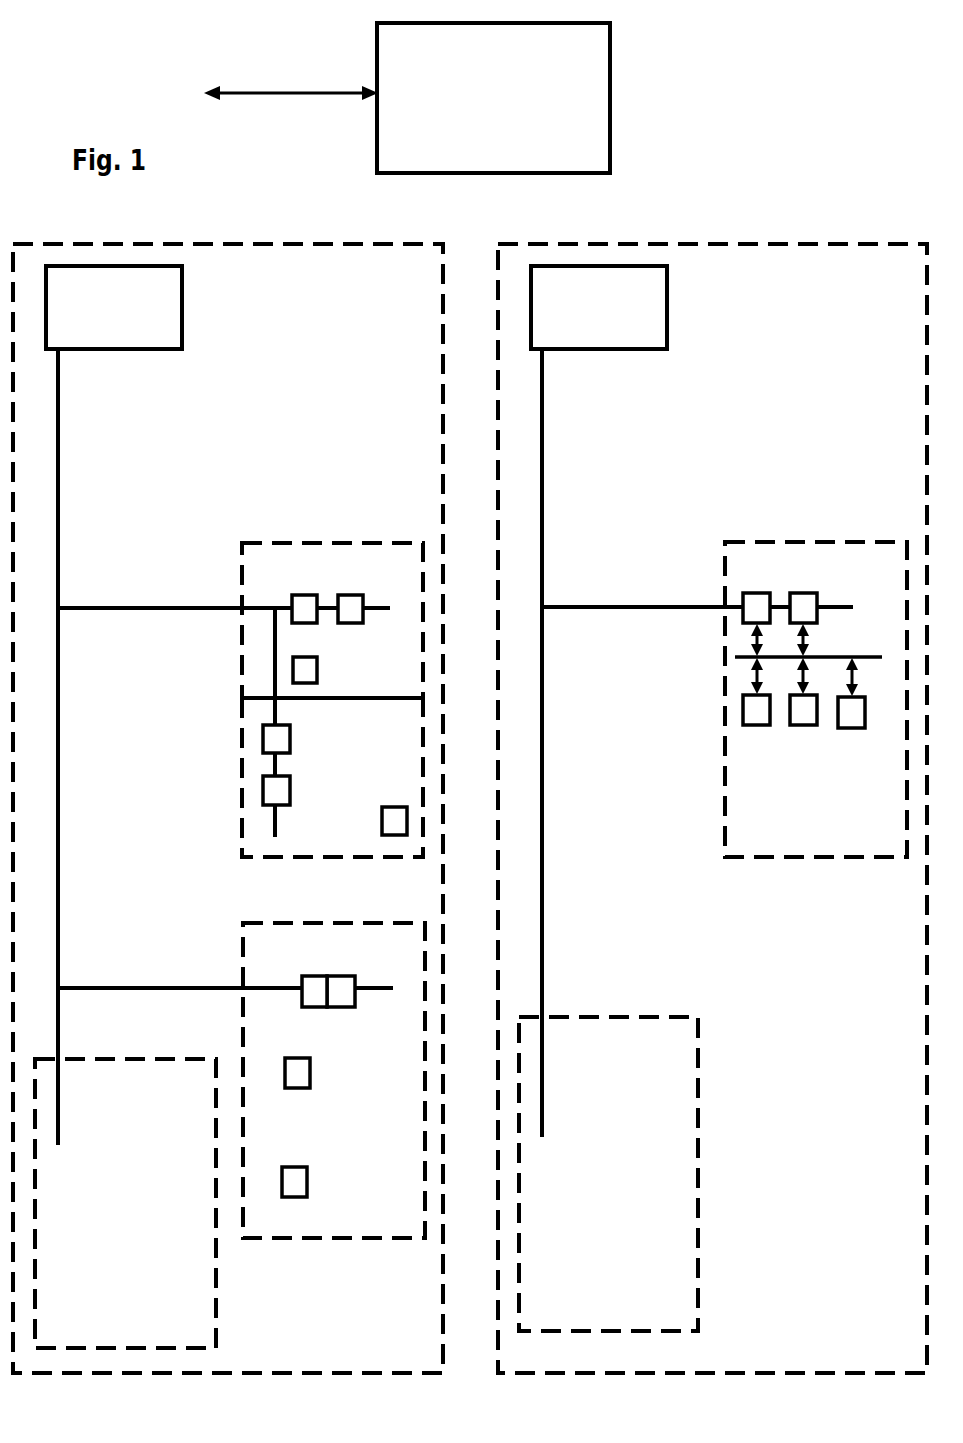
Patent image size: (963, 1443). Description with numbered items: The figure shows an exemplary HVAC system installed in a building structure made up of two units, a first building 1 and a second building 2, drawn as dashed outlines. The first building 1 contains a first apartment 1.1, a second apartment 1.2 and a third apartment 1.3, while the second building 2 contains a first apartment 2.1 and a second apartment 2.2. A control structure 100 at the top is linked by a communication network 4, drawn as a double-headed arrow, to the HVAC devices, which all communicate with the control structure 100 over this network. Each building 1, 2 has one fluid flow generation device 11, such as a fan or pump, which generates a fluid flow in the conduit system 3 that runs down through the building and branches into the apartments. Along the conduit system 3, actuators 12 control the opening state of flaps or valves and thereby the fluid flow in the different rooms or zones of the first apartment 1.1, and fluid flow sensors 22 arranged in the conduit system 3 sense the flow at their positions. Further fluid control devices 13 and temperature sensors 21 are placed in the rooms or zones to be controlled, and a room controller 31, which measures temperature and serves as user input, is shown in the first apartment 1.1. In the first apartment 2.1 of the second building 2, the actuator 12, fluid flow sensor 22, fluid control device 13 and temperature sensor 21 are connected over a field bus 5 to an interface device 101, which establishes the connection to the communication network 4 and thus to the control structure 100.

The first building 1 is at (247, 243).
The second building 2 is at (765, 243).
The conduit system 3 is at (60, 455).
The communication network 4 is at (272, 88).
The field bus 5 is at (854, 657).
The fluid flow generation device 11 is at (99, 310).
The actuator 12 is at (305, 595).
The fluid control device 13 is at (311, 1068).
The temperature sensor 21 is at (318, 672).
The fluid flow sensor 22 is at (352, 595).
The room controller 31 is at (382, 822).
The control structure 100 is at (493, 98).
The interface device 101 is at (845, 728).
The first apartment 1.1 is at (280, 543).
The second apartment 1.2 is at (292, 923).
The third apartment 1.3 is at (120, 1059).
The first apartment 2.1 is at (772, 542).
The second apartment 2.2 is at (620, 1017).